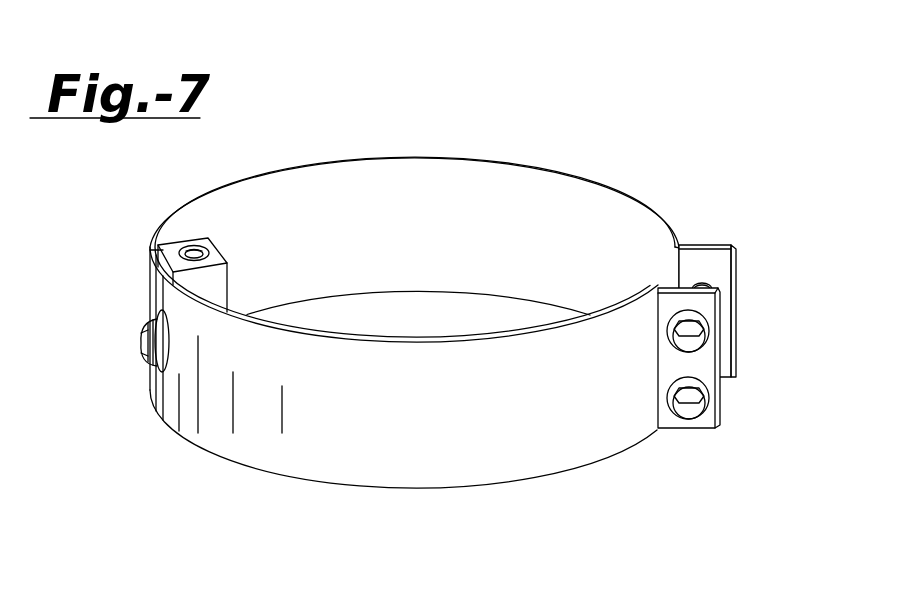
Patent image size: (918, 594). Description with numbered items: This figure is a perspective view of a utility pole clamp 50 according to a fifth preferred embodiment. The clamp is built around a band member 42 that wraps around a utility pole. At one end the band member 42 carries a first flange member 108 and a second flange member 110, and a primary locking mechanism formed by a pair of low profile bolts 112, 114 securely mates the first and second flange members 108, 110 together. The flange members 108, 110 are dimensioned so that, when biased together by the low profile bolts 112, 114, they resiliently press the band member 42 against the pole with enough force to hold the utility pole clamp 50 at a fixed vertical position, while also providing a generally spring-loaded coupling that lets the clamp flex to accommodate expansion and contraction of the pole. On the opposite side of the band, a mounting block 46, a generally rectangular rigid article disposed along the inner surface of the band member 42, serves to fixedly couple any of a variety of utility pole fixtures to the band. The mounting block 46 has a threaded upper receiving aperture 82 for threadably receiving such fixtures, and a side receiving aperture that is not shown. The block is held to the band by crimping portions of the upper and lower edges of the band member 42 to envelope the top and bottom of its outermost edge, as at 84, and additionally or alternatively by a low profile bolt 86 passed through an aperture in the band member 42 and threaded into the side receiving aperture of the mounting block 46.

The band member 42 is at (428, 439).
The mounting block 46 is at (175, 259).
The utility pole clamp 50 is at (564, 150).
The upper receiving aperture 82 is at (208, 257).
The crimped portion 84 is at (162, 255).
The low profile bolt 86 is at (142, 345).
The first flange member 108 is at (723, 243).
The second flange member 110 is at (663, 395).
The low profile bolt 112 is at (671, 341).
The low profile bolt 114 is at (684, 413).